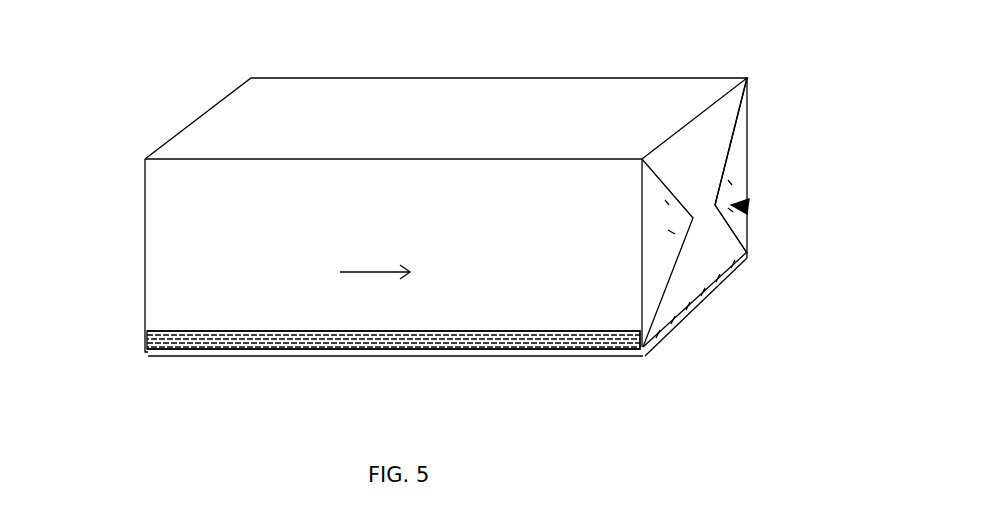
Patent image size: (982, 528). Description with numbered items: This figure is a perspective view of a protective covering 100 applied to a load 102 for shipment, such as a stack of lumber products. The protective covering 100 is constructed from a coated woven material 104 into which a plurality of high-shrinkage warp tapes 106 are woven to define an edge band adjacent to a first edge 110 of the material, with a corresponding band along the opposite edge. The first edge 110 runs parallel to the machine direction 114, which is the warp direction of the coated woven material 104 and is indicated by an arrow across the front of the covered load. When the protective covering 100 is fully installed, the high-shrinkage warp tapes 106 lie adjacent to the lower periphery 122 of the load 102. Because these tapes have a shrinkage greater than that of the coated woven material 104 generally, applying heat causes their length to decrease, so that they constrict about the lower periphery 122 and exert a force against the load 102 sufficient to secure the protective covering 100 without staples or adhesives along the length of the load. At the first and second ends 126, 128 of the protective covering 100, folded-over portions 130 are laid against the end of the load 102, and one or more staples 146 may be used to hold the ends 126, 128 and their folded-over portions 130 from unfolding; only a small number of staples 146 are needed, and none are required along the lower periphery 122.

The protective covering 100 is at (113, 102).
The load 102 is at (557, 357).
The coated woven material 104 is at (657, 98).
The high-shrinkage warp tapes 106 is at (172, 338).
The first edge 110 is at (375, 351).
The machine direction 114 is at (362, 272).
The lower periphery 122 is at (645, 356).
The first end 126 is at (138, 203).
The second end 128 is at (702, 148).
The folded-over portions 130 is at (657, 230).
The staples 146 is at (746, 208).